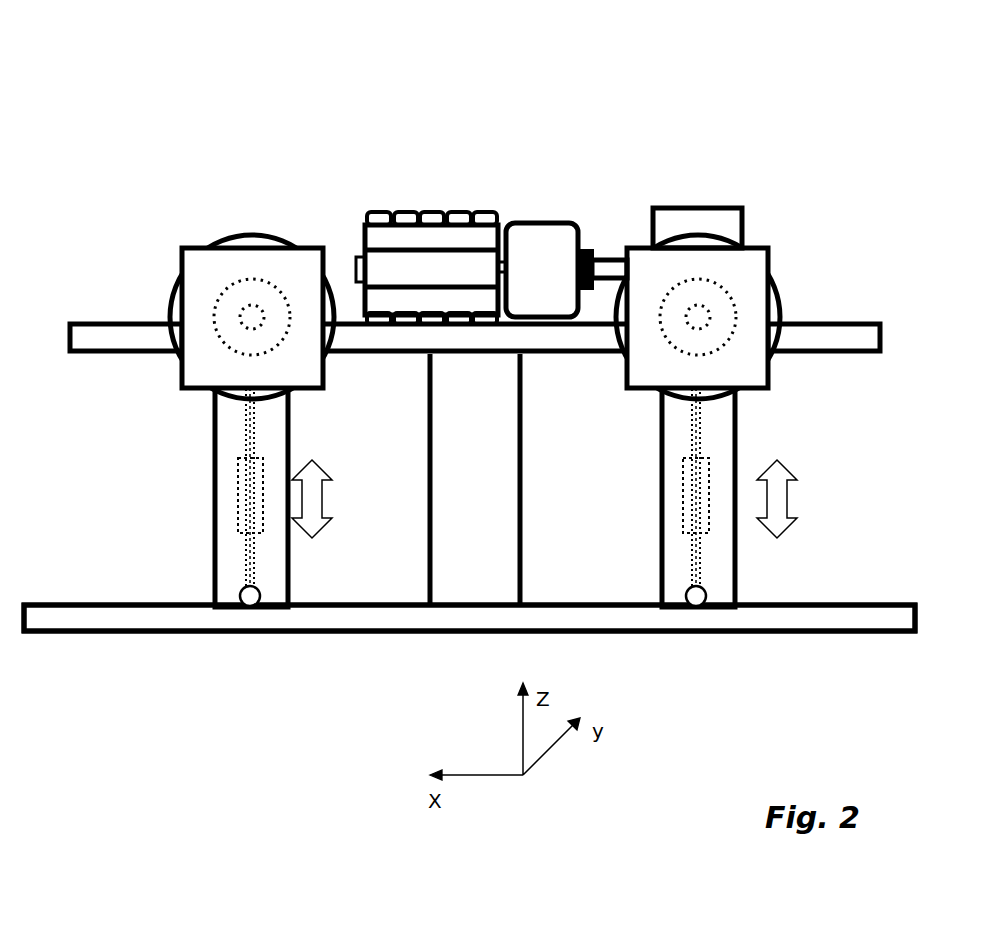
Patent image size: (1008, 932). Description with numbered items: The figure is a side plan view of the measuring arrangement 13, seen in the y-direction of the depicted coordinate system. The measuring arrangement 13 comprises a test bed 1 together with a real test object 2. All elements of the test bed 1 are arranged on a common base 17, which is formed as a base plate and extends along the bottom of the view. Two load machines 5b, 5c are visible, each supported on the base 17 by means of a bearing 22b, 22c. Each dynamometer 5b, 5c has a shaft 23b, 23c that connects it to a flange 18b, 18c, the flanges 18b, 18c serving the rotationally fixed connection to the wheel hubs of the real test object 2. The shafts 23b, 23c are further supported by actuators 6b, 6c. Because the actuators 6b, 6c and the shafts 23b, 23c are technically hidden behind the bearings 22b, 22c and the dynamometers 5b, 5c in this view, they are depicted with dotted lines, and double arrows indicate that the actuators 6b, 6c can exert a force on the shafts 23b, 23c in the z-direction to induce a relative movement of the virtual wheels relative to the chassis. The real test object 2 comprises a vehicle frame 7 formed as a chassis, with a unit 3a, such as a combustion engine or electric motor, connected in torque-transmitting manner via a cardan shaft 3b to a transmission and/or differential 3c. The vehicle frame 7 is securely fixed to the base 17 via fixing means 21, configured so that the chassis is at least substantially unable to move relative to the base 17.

The test bed 1 is at (184, 636).
The real test object 2 is at (405, 210).
The unit 3a is at (540, 228).
The cardan shaft 3b is at (615, 260).
The transmission and/or differential 3c is at (686, 218).
The load machine 5b is at (750, 267).
The load machine 5c is at (263, 260).
The actuator 6b is at (683, 503).
The actuator 6c is at (240, 505).
The vehicle frame 7 is at (78, 343).
The measuring arrangement 13 is at (104, 108).
The base 17 is at (326, 617).
The flange 18b is at (621, 333).
The flange 18c is at (180, 263).
The fixing means 21 is at (475, 479).
The bearing 22b is at (728, 427).
The bearing 22c is at (278, 427).
The shaft 23b is at (696, 327).
The shaft 23c is at (250, 327).